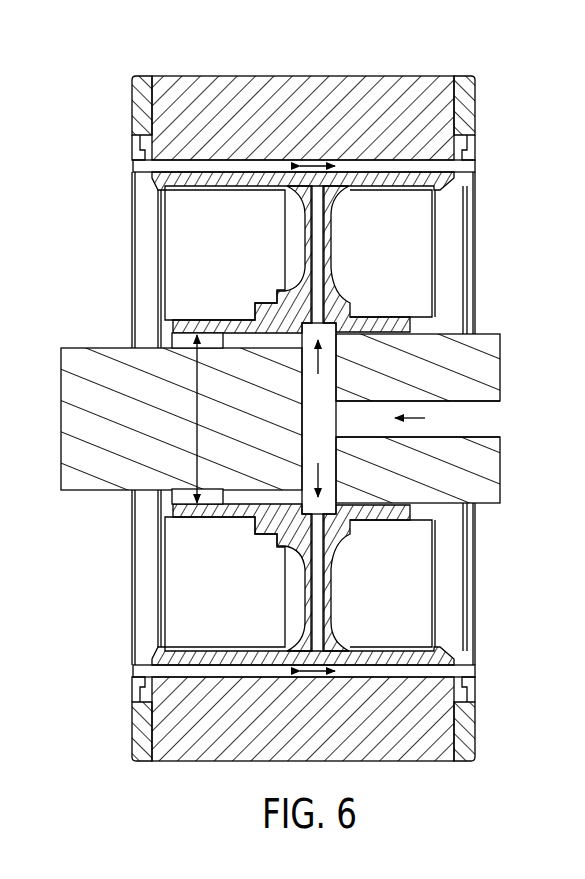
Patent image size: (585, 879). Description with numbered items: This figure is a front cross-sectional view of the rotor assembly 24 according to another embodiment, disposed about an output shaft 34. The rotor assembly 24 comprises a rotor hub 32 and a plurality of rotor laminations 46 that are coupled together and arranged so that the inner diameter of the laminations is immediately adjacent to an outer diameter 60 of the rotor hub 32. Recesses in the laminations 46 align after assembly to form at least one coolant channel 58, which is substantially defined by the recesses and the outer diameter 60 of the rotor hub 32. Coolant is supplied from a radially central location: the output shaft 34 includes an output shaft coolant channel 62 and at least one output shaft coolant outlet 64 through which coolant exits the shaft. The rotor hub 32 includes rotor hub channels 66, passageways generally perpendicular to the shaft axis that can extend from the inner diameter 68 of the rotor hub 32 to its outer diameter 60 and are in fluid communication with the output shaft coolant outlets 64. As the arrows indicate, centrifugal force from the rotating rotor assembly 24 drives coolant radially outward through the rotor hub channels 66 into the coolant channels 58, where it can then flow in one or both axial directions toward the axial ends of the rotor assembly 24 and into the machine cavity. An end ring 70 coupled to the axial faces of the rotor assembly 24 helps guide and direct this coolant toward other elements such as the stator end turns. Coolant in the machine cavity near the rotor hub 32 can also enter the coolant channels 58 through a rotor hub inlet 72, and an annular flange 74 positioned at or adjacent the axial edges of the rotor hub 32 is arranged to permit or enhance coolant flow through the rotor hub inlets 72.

The rotor assembly 24 is at (489, 66).
The rotor hub 32 is at (175, 243).
The output shaft 34 is at (80, 408).
The rotor laminations 46 is at (308, 76).
The coolant channel 58 is at (249, 166).
The outer diameter of the rotor hub 60 is at (193, 182).
The output shaft coolant channel 62 is at (482, 415).
The output shaft coolant outlet 64 is at (328, 373).
The rotor hub channel 66 is at (333, 244).
The inner diameter of the rotor hub 68 is at (197, 372).
The end ring 70 is at (133, 116).
The rotor hub inlet 72 is at (320, 266).
The annular flange 74 is at (450, 181).